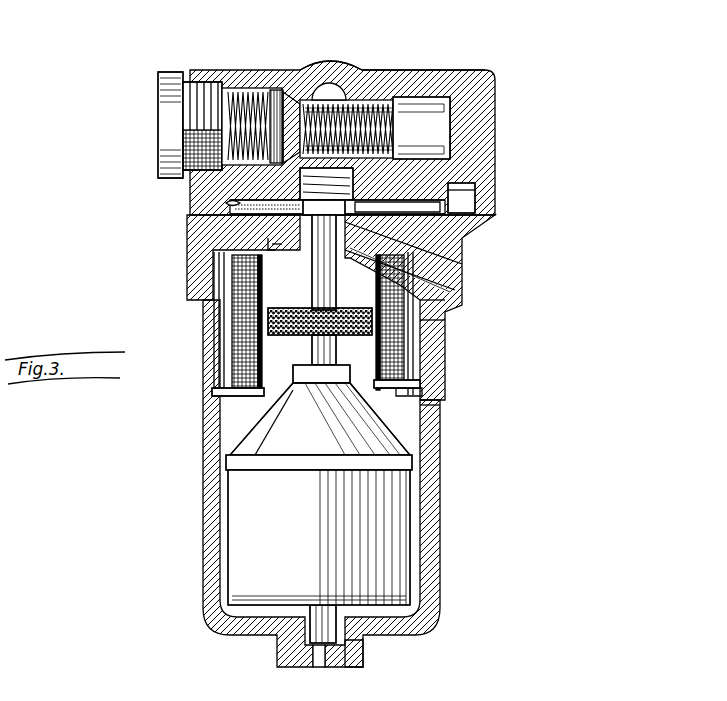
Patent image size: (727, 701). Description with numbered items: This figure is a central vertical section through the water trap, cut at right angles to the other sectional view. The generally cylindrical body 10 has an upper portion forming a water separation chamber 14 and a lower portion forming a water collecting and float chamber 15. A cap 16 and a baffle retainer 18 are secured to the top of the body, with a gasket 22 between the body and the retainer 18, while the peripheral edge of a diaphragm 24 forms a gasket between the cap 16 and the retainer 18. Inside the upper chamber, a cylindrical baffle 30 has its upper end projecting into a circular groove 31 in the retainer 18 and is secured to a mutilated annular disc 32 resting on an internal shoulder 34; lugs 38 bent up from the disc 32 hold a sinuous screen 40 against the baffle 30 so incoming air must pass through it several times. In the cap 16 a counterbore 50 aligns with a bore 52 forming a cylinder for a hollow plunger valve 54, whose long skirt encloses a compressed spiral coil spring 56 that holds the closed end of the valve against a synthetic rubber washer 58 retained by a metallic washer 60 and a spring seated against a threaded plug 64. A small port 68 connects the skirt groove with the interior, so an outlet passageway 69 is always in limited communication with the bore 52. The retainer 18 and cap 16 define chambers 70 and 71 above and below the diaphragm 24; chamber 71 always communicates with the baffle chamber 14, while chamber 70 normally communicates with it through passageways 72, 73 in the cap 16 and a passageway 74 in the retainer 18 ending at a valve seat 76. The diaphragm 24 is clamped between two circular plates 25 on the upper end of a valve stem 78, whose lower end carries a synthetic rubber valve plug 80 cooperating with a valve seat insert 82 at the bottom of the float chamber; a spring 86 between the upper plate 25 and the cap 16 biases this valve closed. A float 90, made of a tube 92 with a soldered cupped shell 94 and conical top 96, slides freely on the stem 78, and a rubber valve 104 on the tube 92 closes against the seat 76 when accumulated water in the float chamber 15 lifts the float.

The body 10 is at (448, 494).
The water separation chamber 14 is at (430, 330).
The water collecting and float chamber 15 is at (400, 418).
The cap 16 is at (496, 93).
The baffle retainer 18 is at (186, 248).
The gasket 22 is at (462, 260).
The diaphragm 24 is at (235, 207).
The circular plates 25 is at (230, 203).
The cylindrical baffle 30 is at (232, 305).
The circular groove 31 is at (283, 266).
The mutilated annular disc 32 is at (235, 392).
The internal shoulder 34 is at (420, 374).
The lugs 38 is at (248, 355).
The screen 40 is at (240, 325).
The counterbore 50 is at (254, 90).
The bore 52 is at (432, 92).
The plunger valve 54 is at (300, 95).
The compressed spiral coil spring 56 is at (222, 84).
The synthetic rubber washer 58 is at (290, 100).
The metallic washer 60 is at (277, 90).
The plug 64 is at (158, 122).
The port 68 is at (330, 84).
The outlet passageway 69 is at (345, 68).
The chamber 70 is at (337, 199).
The chamber 71 is at (272, 245).
The passageway 72 is at (476, 205).
The passageway 73 is at (470, 193).
The passageway 74 is at (455, 240).
The valve seat 76 is at (445, 304).
The valve stem 78 is at (318, 296).
The valve plug 80 is at (345, 650).
The valve seat insert 82 is at (312, 668).
The spring 86 is at (300, 196).
The float 90 is at (410, 456).
The tube 92 is at (310, 349).
The cupped shell 94 is at (380, 543).
The conical top 96 is at (280, 420).
The valve 104 is at (356, 335).